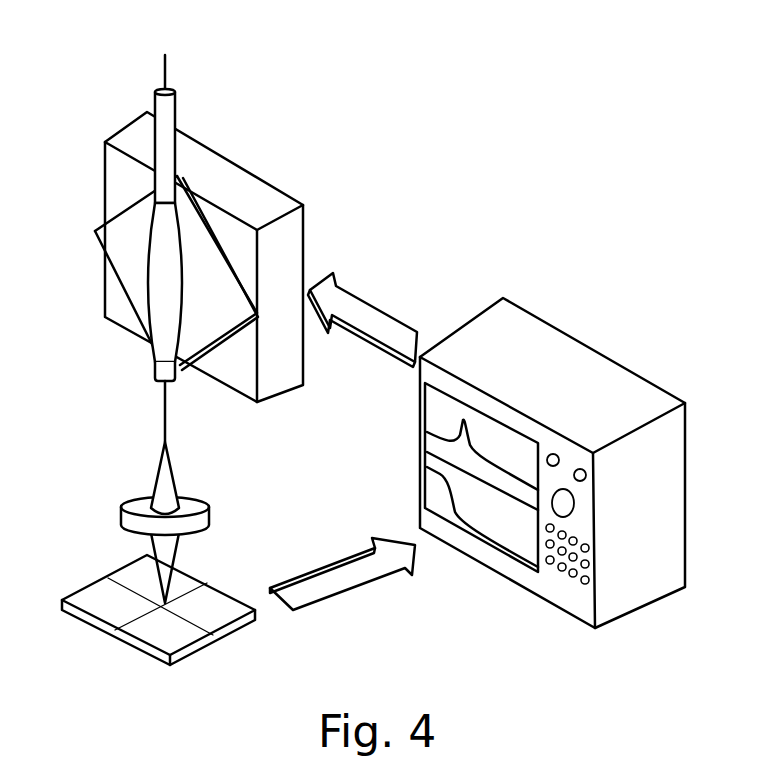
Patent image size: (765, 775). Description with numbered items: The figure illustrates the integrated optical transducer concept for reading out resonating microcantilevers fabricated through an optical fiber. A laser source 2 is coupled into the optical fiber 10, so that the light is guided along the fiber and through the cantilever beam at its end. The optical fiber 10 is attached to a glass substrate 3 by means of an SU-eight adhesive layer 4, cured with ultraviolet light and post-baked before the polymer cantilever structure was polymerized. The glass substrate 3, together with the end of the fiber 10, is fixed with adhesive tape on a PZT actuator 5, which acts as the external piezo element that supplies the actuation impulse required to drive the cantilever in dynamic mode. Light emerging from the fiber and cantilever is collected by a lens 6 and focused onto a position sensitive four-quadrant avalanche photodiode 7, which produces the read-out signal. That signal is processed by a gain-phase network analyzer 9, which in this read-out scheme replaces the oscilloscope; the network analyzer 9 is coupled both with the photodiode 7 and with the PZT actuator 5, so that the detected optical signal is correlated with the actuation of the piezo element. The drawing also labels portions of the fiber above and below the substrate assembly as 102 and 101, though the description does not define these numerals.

The laser source 2 is at (167, 70).
The glass substrate 3 is at (214, 318).
The SU-8 4 is at (165, 348).
The PZT actuator 5 is at (233, 188).
The lens 6 is at (123, 520).
The 4-quadrant avalanche photodiode 7 is at (165, 638).
The network analyzer 9 is at (557, 343).
The optical fiber 10 is at (149, 134).
The fiber end / output fiber 101 is at (172, 387).
The fiber end face 102 is at (157, 92).